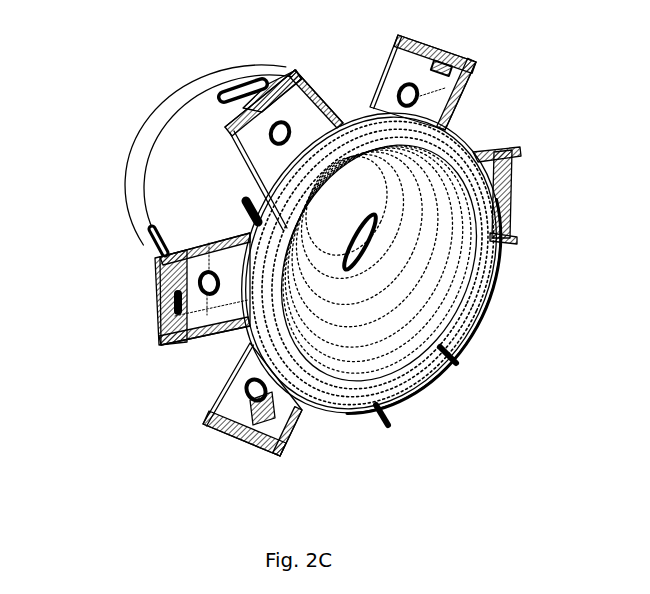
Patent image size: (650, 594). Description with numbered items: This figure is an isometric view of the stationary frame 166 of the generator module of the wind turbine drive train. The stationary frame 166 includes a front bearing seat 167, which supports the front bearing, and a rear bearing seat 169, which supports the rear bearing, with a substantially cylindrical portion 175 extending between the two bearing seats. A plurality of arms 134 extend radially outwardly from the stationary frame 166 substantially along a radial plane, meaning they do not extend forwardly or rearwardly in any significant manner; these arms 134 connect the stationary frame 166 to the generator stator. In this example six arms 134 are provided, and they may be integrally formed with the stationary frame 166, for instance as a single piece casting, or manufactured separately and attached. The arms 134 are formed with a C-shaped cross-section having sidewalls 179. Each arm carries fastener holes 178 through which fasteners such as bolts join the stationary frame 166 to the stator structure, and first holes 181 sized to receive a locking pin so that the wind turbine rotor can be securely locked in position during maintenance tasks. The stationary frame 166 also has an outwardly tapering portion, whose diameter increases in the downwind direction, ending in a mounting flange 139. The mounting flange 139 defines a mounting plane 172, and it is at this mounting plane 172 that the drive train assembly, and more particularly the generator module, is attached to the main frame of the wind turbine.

The arms 134 is at (463, 97).
The mounting flange 139 is at (357, 108).
The stationary frame 166 is at (100, 255).
The front bearing seat 167 is at (182, 89).
The rear bearing seat 169 is at (240, 223).
The mounting plane 172 is at (481, 280).
The substantially cylindrical portion 175 is at (153, 195).
The fastener holes 178 is at (156, 300).
The sidewalls 179 is at (163, 344).
The first holes 181 is at (284, 405).